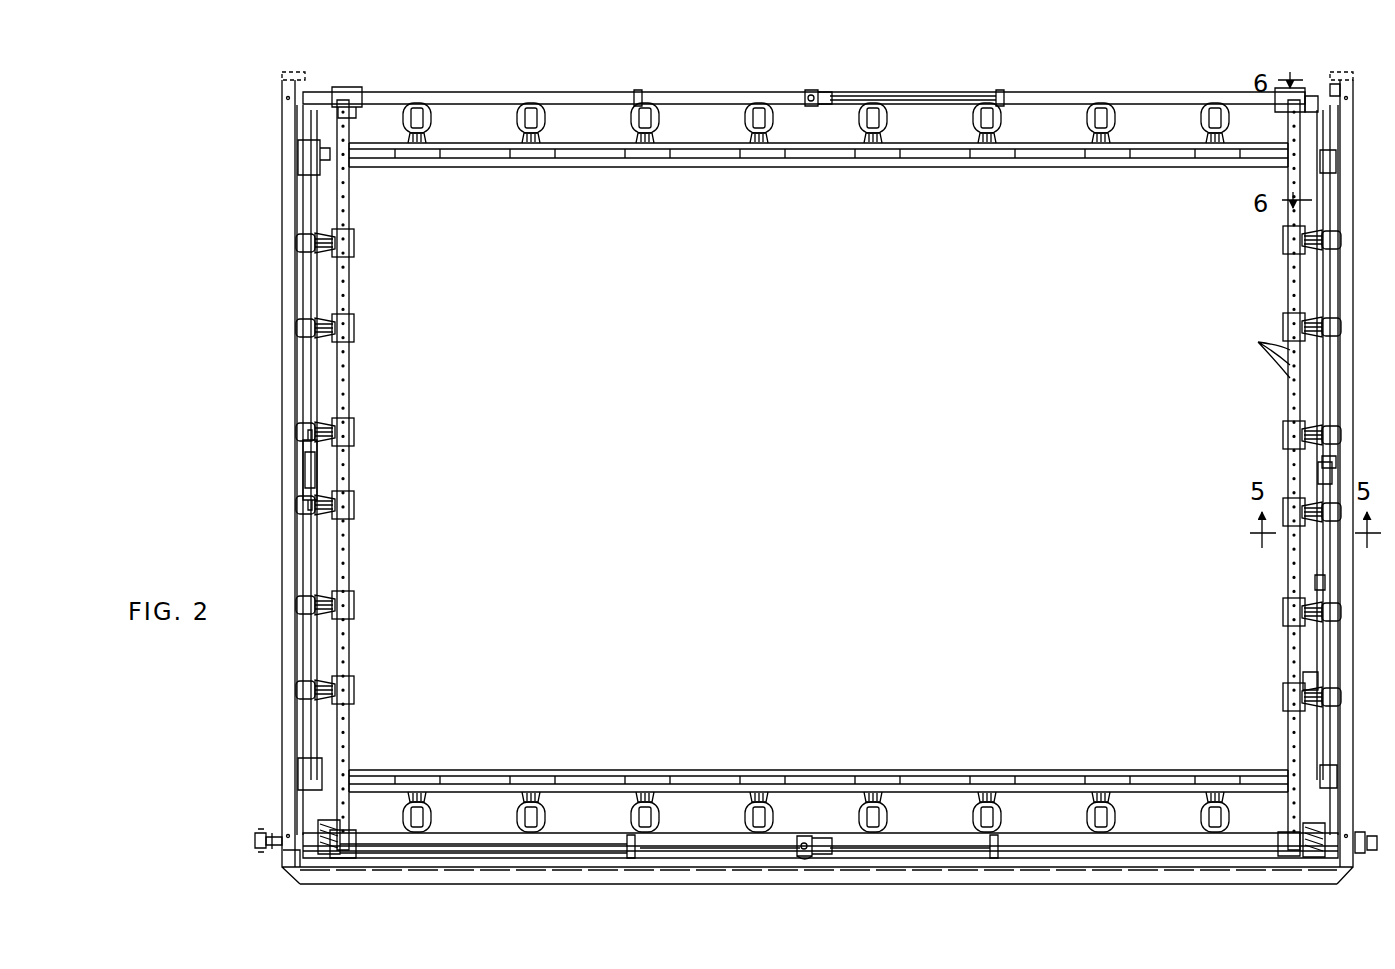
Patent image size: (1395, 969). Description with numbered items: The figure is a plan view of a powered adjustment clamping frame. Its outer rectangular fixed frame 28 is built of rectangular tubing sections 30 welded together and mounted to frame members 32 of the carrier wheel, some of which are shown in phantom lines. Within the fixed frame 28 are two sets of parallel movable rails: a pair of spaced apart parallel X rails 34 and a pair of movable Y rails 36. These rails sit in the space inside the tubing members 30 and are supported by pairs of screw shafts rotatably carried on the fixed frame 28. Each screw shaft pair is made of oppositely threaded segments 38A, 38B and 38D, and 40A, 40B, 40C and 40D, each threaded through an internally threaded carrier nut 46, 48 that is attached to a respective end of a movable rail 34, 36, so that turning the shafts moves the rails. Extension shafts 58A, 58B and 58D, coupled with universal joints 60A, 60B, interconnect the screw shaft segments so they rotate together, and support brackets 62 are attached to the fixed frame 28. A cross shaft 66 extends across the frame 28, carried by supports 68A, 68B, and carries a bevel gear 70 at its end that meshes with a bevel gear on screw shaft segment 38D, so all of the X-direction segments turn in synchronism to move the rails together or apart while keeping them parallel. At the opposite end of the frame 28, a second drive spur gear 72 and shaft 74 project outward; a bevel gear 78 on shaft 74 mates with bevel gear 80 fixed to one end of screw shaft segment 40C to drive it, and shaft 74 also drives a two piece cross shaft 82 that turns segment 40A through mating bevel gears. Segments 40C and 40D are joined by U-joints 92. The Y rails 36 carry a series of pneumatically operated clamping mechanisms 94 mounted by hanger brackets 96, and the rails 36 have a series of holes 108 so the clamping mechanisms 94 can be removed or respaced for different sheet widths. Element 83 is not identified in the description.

The outer rectangular fixed frame 28 is at (286, 353).
The rectangular tubing sections 30 is at (332, 99).
The frame members 32 is at (283, 84).
The X rails 34 is at (508, 157).
The Y rails 36 is at (347, 285).
The screw shaft segment 38A is at (541, 102).
The screw shaft segment 38B is at (584, 832).
The screw shaft segment 38D is at (1106, 100).
The screw shaft segment 40A is at (1320, 557).
The screw shaft segment 40B is at (1320, 410).
The screw shaft segment 40C is at (322, 546).
The screw shaft segment 40D is at (320, 214).
The carrier nut 46 is at (332, 97).
The carrier nut 48 is at (306, 153).
The extension shaft 58A is at (940, 836).
The extension shaft 58B is at (708, 833).
The extension shaft 58D is at (923, 93).
The universal joint 60A is at (808, 841).
The universal joint 60B is at (808, 106).
The support brackets 62 is at (634, 104).
The cross shaft 66 is at (1315, 582).
The support 68A is at (1327, 474).
The support 68B is at (1336, 88).
The bevel gear 70 is at (1310, 112).
The second drive spur gear 72 is at (258, 848).
The shaft 74 is at (278, 838).
The bevel gear 78 is at (322, 848).
The bevel gear 80 is at (333, 834).
The two piece cross shaft 82 is at (497, 846).
The clip 83 is at (804, 855).
The U-joints 92 is at (318, 462).
The clamping mechanisms 94 is at (1306, 682).
The hanger brackets 96 is at (1322, 466).
The holes 108 is at (1258, 342).